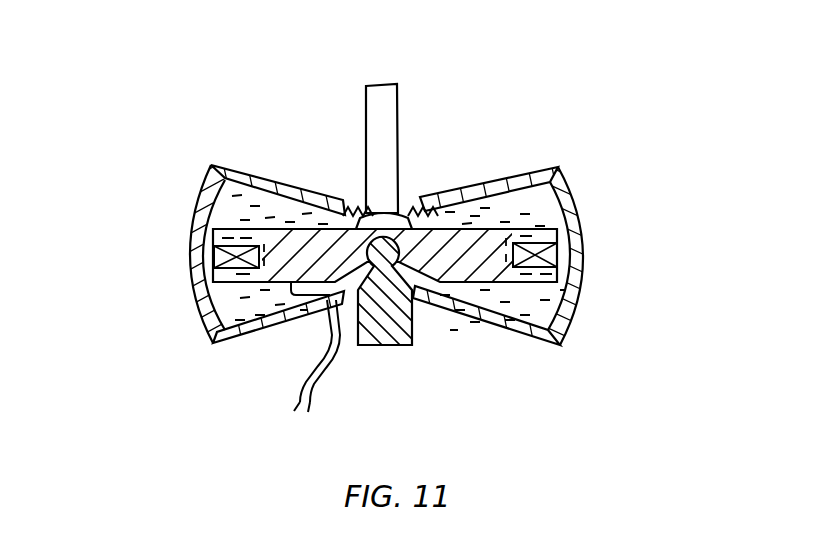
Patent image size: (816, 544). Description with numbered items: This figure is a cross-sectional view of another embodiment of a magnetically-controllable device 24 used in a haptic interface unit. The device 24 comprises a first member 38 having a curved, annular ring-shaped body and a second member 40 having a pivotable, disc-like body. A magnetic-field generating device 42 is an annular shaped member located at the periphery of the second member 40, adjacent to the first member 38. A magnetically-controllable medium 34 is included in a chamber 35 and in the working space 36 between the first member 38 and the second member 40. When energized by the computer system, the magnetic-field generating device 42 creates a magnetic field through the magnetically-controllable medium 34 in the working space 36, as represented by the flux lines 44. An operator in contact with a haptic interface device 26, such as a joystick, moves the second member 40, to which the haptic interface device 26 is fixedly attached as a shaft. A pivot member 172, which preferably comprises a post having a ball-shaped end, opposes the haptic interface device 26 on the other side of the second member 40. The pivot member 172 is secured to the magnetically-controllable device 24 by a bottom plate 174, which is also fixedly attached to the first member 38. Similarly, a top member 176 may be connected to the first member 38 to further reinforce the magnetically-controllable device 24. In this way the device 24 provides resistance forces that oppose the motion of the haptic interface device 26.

The magnetically-controllable device 24 is at (556, 80).
The haptic interface device 26 is at (402, 124).
The magnetically-controllable medium 34 is at (232, 310).
The chamber 35 is at (268, 208).
The working space 36 is at (592, 258).
The first member 38 is at (574, 197).
The second member 40 is at (473, 242).
The magnetic-field generating device 42 is at (200, 262).
The flux lines 44 is at (214, 235).
The pivot member 172 is at (413, 330).
The bottom plate 174 is at (270, 335).
The top member 176 is at (259, 195).